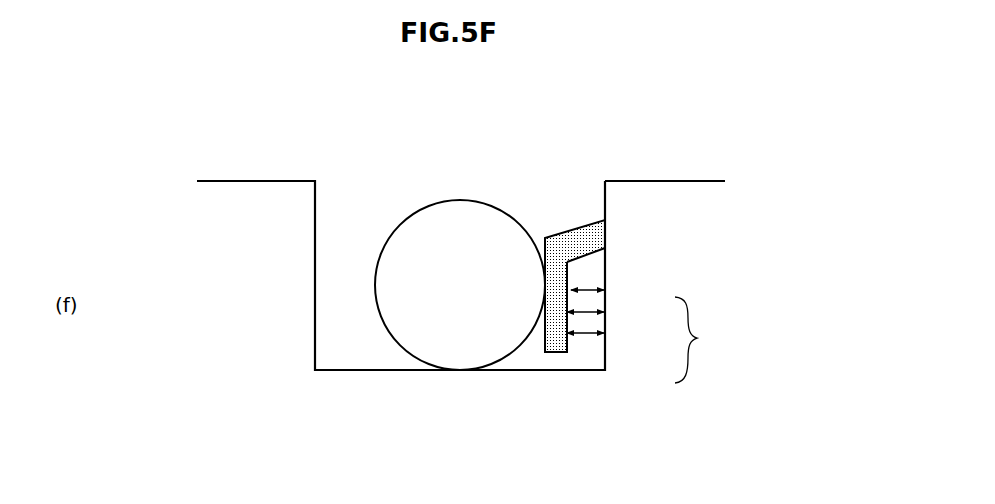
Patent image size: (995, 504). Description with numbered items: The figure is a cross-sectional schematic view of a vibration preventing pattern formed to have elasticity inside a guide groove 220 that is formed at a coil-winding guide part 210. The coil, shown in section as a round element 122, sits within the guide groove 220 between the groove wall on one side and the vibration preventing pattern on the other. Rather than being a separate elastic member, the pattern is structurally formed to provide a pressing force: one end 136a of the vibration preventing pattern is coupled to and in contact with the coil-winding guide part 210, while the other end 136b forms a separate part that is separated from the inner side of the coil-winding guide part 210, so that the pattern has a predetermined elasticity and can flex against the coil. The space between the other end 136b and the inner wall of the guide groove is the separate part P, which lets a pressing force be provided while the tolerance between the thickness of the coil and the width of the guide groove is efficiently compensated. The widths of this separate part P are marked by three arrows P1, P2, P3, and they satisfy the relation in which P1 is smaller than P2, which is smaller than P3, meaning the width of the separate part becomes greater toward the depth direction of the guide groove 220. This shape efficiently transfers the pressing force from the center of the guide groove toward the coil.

The guide groove 220 is at (374, 185).
The coil-winding guide part 210 is at (653, 240).
The roller 122 is at (457, 222).
The one end of the vibration preventing pattern 136a is at (557, 240).
The other end of the vibration preventing pattern 136b is at (555, 342).
The width of the separate part P1 is at (583, 290).
The width of the separate part P2 is at (583, 312).
The width of the separate part P3 is at (590, 333).
The separate part P is at (695, 340).